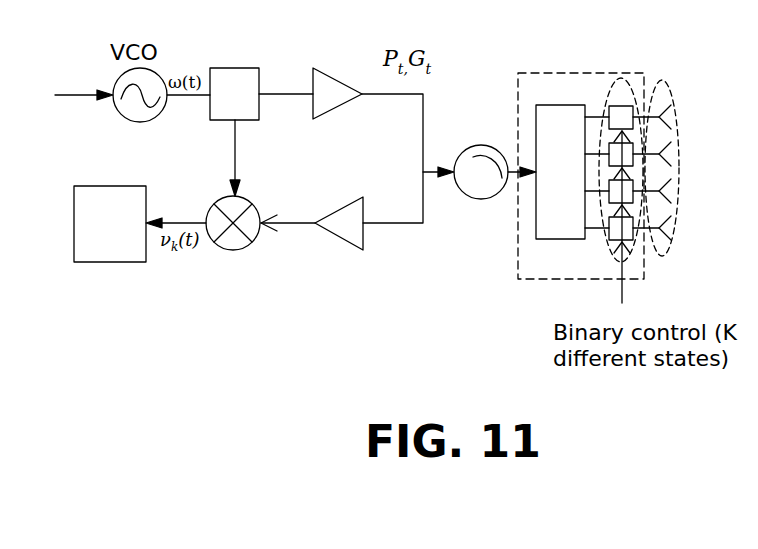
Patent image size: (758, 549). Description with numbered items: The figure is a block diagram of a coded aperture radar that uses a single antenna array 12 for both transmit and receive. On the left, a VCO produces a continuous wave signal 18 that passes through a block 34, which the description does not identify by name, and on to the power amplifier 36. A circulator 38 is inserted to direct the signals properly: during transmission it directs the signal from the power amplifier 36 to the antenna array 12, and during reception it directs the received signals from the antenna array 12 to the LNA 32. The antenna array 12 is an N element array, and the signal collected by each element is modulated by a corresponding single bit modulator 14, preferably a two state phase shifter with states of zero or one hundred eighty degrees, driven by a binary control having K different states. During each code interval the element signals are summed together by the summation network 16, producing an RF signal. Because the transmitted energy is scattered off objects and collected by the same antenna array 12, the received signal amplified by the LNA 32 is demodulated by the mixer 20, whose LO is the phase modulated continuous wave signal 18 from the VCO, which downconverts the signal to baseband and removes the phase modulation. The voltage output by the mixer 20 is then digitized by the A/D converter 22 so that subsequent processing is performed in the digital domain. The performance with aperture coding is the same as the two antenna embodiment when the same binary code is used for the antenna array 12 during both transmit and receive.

The antenna array 12 is at (676, 256).
The single bit modulators 14 is at (606, 98).
The summation network 16 is at (542, 228).
The continuous wave signal 18 is at (234, 152).
The mixer 20 is at (239, 239).
The A/D converter 22 is at (124, 250).
The LNA 32 is at (349, 224).
The modulator 34 is at (246, 79).
The power amplifier 36 is at (328, 92).
The circulator 38 is at (470, 184).